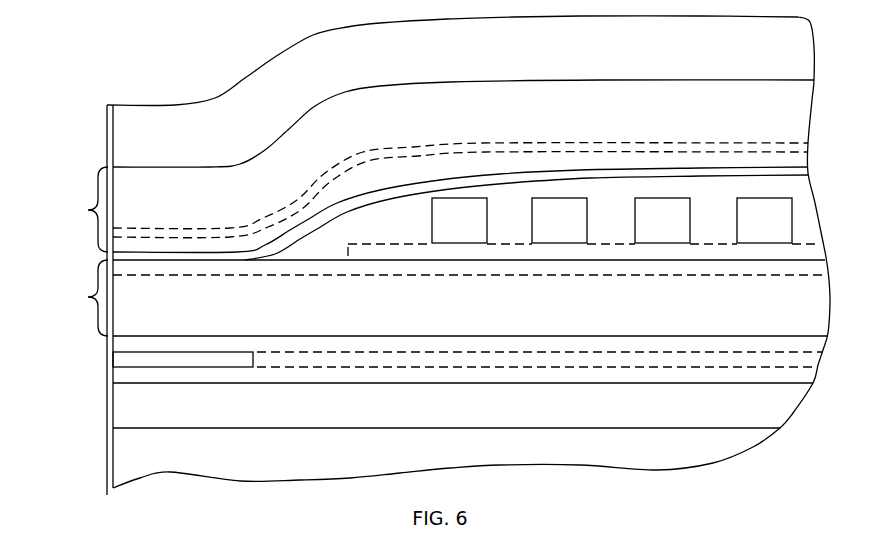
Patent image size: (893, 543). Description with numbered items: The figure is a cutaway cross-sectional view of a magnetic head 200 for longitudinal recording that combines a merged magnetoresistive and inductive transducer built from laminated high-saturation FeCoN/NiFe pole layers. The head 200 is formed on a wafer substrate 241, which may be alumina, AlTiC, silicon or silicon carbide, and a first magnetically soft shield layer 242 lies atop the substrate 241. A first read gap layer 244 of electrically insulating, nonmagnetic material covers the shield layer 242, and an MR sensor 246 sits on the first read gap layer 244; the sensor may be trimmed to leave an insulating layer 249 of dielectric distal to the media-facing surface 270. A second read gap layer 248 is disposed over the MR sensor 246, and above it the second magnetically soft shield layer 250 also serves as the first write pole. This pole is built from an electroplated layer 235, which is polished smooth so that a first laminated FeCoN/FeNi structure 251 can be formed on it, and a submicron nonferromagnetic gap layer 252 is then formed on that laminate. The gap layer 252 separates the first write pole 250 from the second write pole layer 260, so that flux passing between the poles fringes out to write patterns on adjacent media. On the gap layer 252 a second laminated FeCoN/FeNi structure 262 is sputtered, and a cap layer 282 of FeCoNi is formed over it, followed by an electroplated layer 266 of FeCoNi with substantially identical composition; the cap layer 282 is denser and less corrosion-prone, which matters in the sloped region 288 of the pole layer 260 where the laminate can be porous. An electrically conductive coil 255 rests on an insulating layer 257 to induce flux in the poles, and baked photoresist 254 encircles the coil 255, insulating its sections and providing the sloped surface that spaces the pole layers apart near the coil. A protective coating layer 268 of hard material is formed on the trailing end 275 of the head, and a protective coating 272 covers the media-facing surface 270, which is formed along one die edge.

The magnetic head 200 is at (128, 66).
The trailing end 275 is at (263, 64).
The protective coating layer 268 is at (554, 65).
The layer of FeCoNi 266 is at (554, 122).
The cap layer 282 is at (480, 143).
The second laminated FeCoN/FeNi structure 262 is at (185, 237).
The gap layer 252 is at (222, 262).
The second write pole layer 260 is at (435, 213).
The second magnetically soft shield layer 250 is at (437, 298).
The baked photoresist 254 is at (378, 225).
The electrically conductive coil 255 is at (560, 243).
The insulating layer 257 is at (717, 239).
The sloped region 288 is at (303, 223).
The first laminated FeCoN/FeNi structure 251 is at (280, 278).
The MR sensor 246 is at (160, 357).
The electroplated layer 235 is at (423, 336).
The insulating layer 249 is at (604, 367).
The second read gap layer 248 is at (718, 348).
The first read gap layer 244 is at (502, 378).
The first magnetically soft shield layer 242 is at (285, 420).
The wafer substrate 241 is at (383, 470).
The protective coating 272 is at (114, 405).
The media-facing surface 270 is at (105, 445).